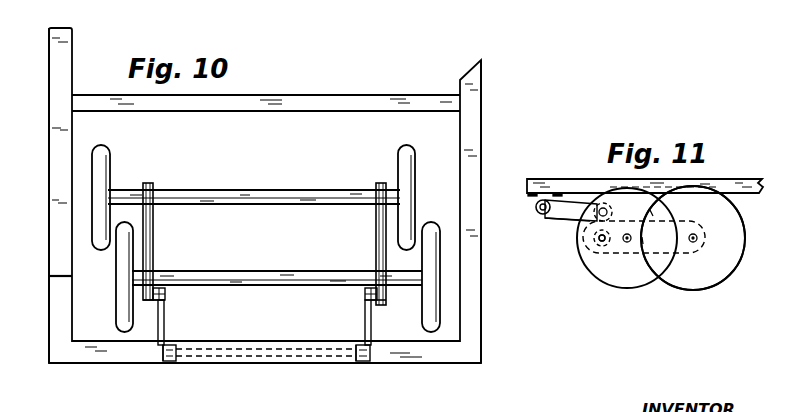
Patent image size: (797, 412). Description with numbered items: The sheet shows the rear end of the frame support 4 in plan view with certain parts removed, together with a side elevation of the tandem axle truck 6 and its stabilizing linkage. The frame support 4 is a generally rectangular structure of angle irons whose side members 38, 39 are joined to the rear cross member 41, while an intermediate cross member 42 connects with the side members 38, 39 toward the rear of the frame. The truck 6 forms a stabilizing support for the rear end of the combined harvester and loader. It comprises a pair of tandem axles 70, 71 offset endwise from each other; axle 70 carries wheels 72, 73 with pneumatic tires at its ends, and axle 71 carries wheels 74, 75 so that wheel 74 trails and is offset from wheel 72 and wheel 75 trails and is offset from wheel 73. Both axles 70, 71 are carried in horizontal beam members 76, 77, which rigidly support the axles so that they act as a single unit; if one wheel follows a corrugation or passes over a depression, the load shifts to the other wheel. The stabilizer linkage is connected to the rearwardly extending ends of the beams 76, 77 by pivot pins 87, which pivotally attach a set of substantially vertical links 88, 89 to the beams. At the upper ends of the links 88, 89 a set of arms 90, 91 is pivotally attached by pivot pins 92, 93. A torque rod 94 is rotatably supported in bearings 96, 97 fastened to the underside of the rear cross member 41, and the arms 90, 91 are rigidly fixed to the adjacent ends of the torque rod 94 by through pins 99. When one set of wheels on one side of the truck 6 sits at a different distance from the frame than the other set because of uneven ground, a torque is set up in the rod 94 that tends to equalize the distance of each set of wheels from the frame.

In FIG. 10, the frame support 4 is at (484, 62).
In FIG. 11, the frame support 4 is at (686, 262).
In FIG. 10, the truck 6 is at (298, 190).
In FIG. 10, the side member 38 is at (55, 236).
In FIG. 10, the side member 39 is at (483, 262).
In FIG. 11, the side member 39 is at (722, 185).
In FIG. 10, the rear cross member 41 is at (402, 364).
In FIG. 10, the intermediate cross member 42 is at (300, 101).
In FIG. 10, the axle 70 is at (258, 192).
In FIG. 11, the axle 70 is at (729, 273).
In FIG. 10, the axle 71 is at (205, 278).
In FIG. 11, the axle 71 is at (638, 245).
In FIG. 10, the wheel 72 is at (96, 154).
In FIG. 10, the wheel 73 is at (413, 163).
In FIG. 10, the wheel 74 is at (115, 302).
In FIG. 10, the wheel 75 is at (437, 305).
In FIG. 10, the horizontal beam member 76 is at (151, 250).
In FIG. 10, the horizontal beam member 77 is at (376, 240).
In FIG. 11, the horizontal beam member 77 is at (628, 246).
In FIG. 10, the pivot pin 87 is at (365, 297).
In FIG. 11, the pivot pin 87 is at (603, 246).
In FIG. 10, the link 88 is at (155, 306).
In FIG. 10, the link 89 is at (376, 310).
In FIG. 11, the link 89 is at (597, 234).
In FIG. 10, the arm 90 is at (166, 330).
In FIG. 11, the arm 91 is at (568, 222).
In FIG. 10, the pivot pin 92 is at (165, 295).
In FIG. 10, the pivot pin 93 is at (366, 322).
In FIG. 11, the pivot pin 93 is at (604, 190).
In FIG. 10, the torque rod 94 is at (258, 360).
In FIG. 10, the bearing 96 is at (178, 366).
In FIG. 10, the bearing 97 is at (352, 364).
In FIG. 11, the bearing 97 is at (530, 196).
In FIG. 10, the through pin 99 is at (160, 359).
In FIG. 11, the through pin 99 is at (548, 217).